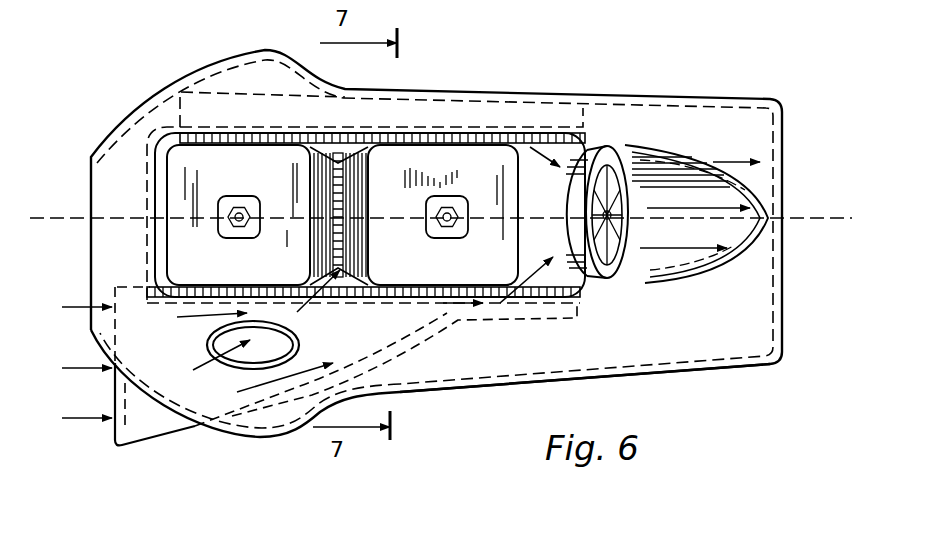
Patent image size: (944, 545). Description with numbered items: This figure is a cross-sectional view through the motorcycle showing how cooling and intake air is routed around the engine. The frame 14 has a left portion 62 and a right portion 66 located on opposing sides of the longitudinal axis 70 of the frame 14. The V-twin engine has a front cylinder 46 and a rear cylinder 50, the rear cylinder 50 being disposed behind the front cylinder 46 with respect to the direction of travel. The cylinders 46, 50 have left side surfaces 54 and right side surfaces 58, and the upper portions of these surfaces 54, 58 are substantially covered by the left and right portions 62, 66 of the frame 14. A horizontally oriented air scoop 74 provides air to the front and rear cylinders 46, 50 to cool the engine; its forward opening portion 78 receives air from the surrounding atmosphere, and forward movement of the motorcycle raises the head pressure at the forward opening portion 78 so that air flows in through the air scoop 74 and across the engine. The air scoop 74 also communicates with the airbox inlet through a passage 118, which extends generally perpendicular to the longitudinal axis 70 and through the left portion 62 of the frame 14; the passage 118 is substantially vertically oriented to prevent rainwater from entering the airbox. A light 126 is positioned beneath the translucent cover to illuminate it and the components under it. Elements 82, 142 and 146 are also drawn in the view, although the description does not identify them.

The frame 14 is at (120, 192).
The front cylinder 46 is at (250, 177).
The rear cylinder 50 is at (484, 273).
The left side surfaces 54 is at (229, 288).
The right side surfaces 58 is at (237, 133).
The left portion of the frame 62 is at (443, 363).
The right portion of the frame 66 is at (260, 63).
The longitudinal axis 70 is at (838, 218).
The air scoop 74 is at (163, 410).
The forward opening portion 78 is at (115, 440).
The duct 82 is at (503, 315).
The passage 118 is at (300, 340).
The light 126 is at (208, 333).
The fan shroud 142 is at (600, 138).
The filter 146 is at (463, 137).